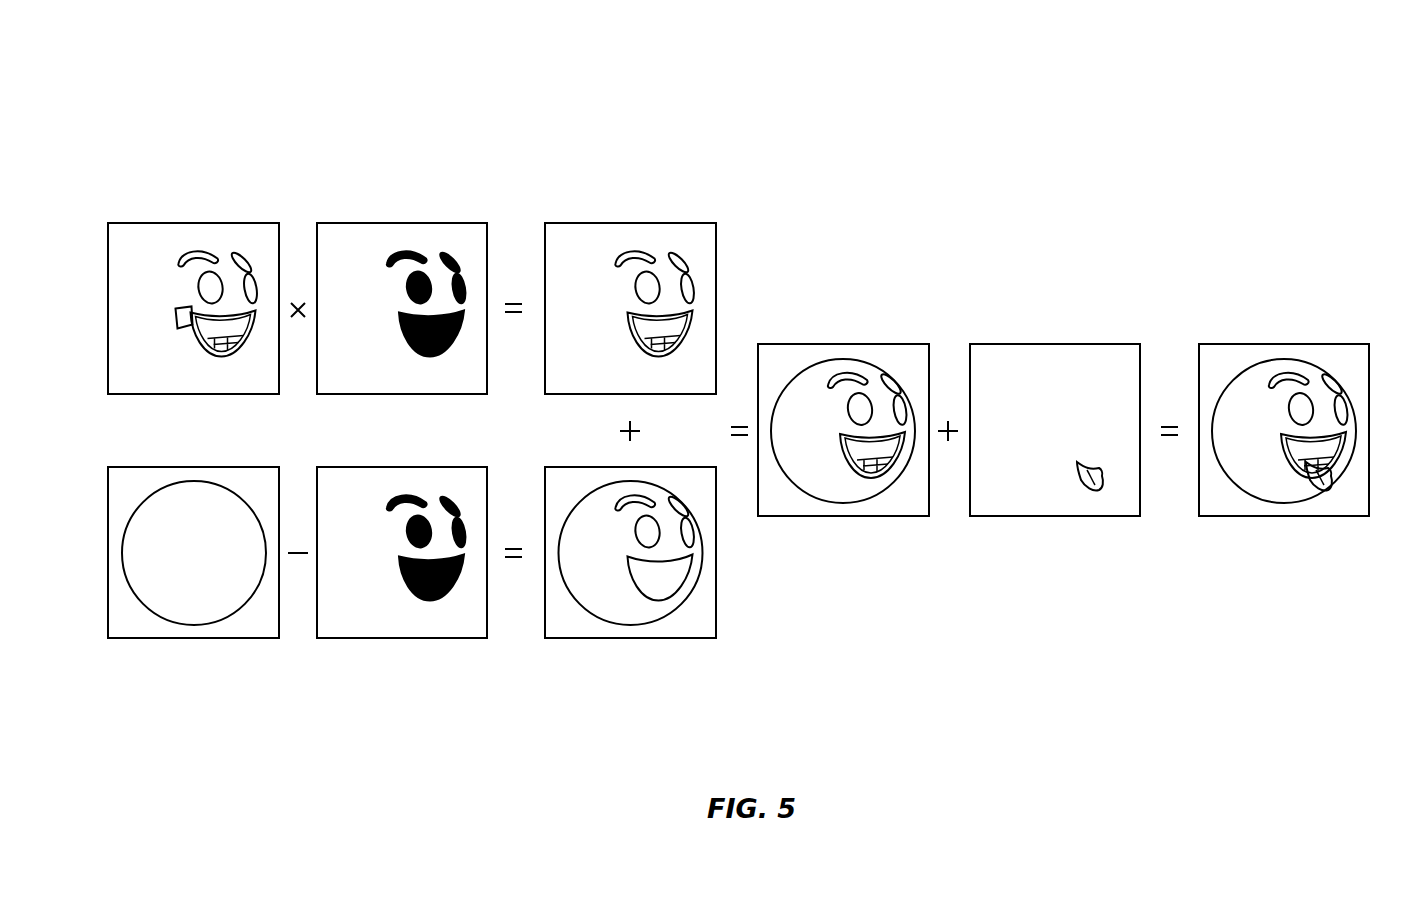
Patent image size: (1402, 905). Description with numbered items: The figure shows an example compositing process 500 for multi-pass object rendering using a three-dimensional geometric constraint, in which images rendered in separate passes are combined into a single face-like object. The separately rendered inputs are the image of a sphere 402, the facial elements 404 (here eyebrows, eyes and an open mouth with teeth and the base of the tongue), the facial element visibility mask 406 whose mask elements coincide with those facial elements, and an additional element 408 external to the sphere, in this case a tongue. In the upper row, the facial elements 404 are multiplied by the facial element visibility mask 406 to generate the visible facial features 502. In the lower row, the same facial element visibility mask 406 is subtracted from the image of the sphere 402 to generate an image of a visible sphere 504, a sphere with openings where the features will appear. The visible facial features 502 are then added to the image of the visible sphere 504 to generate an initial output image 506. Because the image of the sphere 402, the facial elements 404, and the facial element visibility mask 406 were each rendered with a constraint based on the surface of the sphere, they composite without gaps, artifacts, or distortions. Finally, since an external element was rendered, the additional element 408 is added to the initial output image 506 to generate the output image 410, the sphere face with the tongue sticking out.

The compositing process 500 is at (180, 32).
The image of a sphere 402 is at (192, 662).
The facial elements 404 is at (193, 208).
The facial element visibility mask 406 is at (401, 208).
The additional element 408 is at (1057, 330).
The output image 410 is at (1281, 330).
The visible facial features 502 is at (627, 208).
The image of a visible sphere 504 is at (636, 662).
The initial output image 506 is at (847, 330).